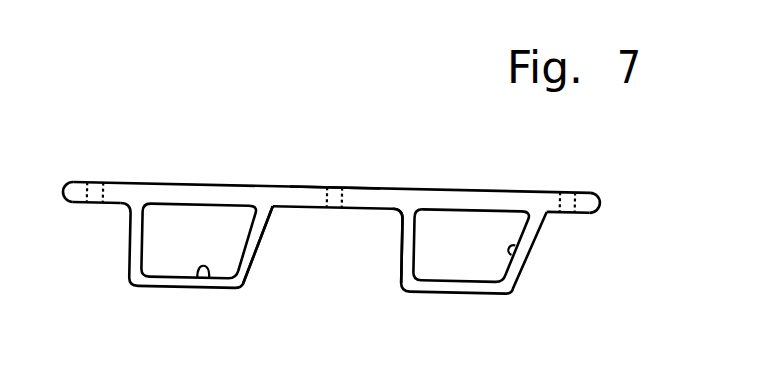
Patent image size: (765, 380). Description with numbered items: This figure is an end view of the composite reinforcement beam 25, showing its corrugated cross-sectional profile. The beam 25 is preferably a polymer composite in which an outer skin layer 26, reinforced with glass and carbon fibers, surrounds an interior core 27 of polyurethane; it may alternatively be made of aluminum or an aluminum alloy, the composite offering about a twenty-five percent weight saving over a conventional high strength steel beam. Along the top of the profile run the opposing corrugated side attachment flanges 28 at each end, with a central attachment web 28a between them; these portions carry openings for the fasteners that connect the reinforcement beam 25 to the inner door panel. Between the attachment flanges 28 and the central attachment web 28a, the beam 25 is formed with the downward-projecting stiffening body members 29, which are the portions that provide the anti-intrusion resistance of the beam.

The reinforcement beam 25 is at (270, 121).
The outer skin layer 26 is at (402, 260).
The interior core 27 is at (211, 274).
The corrugated side attachment flange 28 is at (79, 181).
The central attachment web 28a is at (300, 186).
The stiffening body member 29 is at (130, 280).